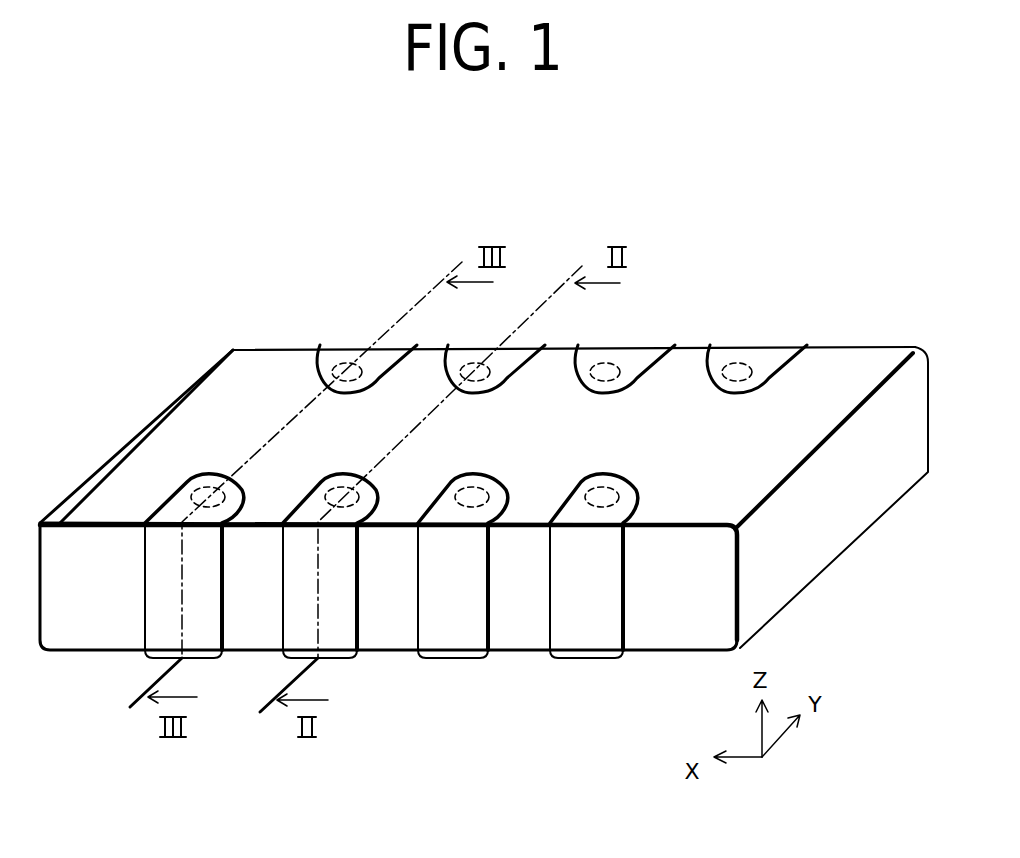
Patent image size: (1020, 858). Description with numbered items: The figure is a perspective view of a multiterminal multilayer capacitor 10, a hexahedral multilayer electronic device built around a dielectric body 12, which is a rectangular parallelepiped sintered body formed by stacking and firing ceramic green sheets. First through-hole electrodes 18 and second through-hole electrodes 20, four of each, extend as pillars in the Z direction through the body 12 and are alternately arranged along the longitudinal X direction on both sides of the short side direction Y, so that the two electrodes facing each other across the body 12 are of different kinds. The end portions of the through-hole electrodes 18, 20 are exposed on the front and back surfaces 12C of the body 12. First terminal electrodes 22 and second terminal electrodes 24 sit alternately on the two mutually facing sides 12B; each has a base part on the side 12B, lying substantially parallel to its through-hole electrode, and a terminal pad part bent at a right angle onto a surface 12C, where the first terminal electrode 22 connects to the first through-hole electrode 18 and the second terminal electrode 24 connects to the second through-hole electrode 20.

The multiterminal multilayer capacitor 10 is at (716, 270).
The dielectric body 12 is at (842, 345).
The sides of the dielectric body 12B is at (302, 347).
The front and back surfaces of the dielectric body 12C is at (268, 362).
The first through-hole electrode 18 is at (207, 480).
The second through-hole electrode 20 is at (342, 482).
The first terminal electrode 22 is at (195, 660).
The second terminal electrode 24 is at (348, 660).